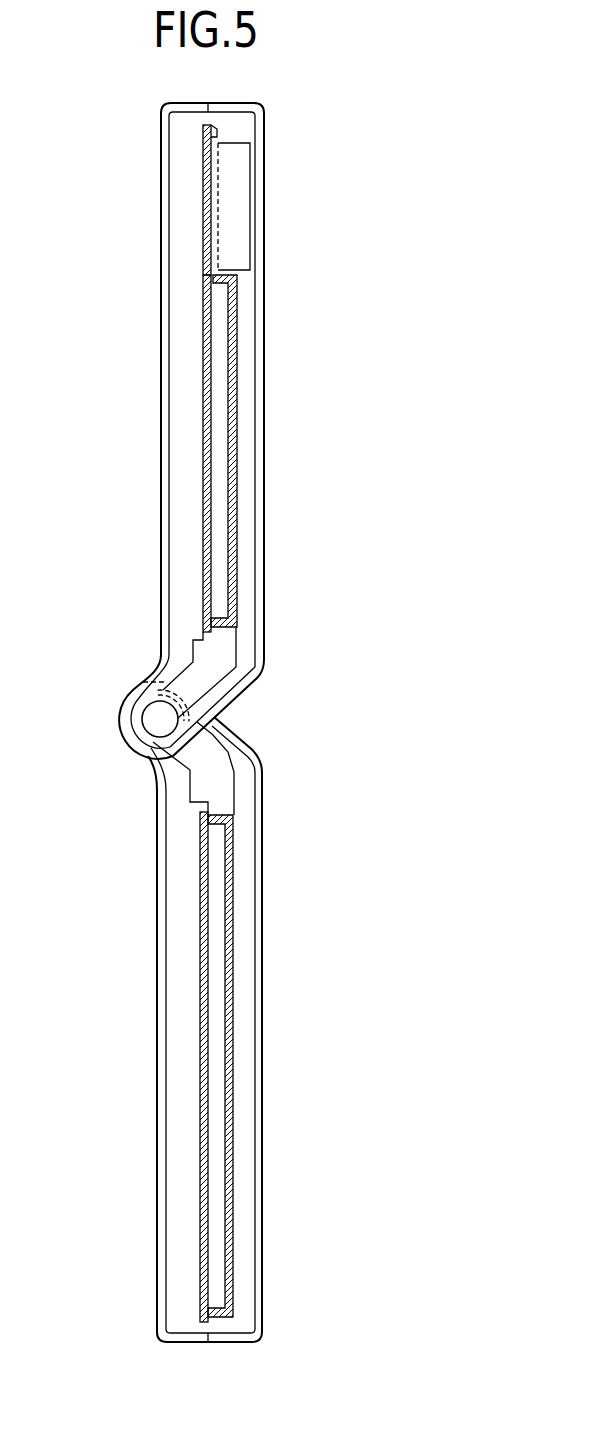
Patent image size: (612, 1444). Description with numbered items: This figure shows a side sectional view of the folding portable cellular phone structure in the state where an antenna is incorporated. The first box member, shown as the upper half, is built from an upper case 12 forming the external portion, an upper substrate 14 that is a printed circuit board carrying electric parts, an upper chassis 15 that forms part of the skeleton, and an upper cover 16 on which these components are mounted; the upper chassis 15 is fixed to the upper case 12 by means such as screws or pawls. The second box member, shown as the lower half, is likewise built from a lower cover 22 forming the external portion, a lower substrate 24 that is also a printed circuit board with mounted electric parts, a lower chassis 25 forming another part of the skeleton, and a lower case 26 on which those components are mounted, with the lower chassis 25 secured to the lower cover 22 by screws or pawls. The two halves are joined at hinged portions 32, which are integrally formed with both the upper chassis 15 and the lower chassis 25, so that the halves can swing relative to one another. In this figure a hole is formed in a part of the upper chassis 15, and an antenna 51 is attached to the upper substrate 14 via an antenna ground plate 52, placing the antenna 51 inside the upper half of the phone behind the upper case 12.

The upper case 12 is at (163, 228).
The upper substrate 14 is at (203, 395).
The upper chassis 15 is at (238, 345).
The upper cover 16 is at (263, 512).
The lower cover 22 is at (158, 885).
The lower substrate 24 is at (202, 1013).
The lower chassis 25 is at (234, 975).
The lower case 26 is at (262, 840).
The hinged portions 32 is at (150, 722).
The antenna 51 is at (235, 179).
The antenna ground plate 52 is at (210, 219).